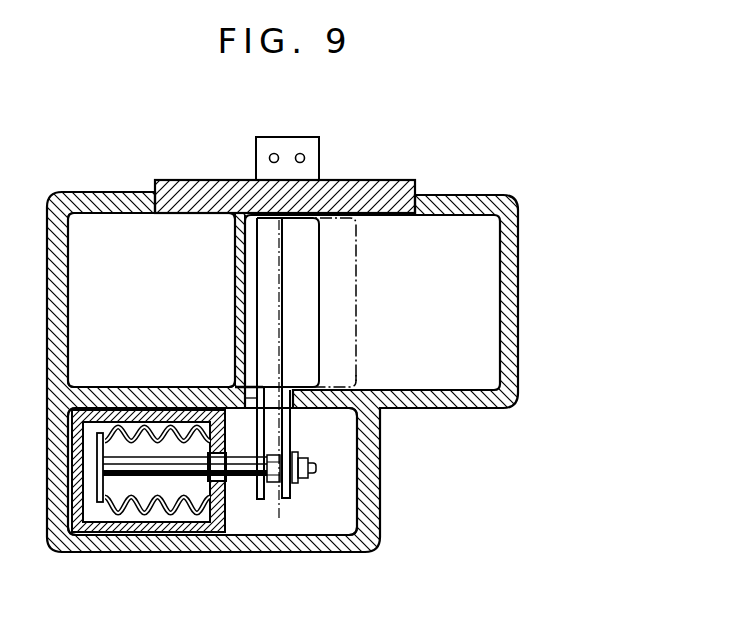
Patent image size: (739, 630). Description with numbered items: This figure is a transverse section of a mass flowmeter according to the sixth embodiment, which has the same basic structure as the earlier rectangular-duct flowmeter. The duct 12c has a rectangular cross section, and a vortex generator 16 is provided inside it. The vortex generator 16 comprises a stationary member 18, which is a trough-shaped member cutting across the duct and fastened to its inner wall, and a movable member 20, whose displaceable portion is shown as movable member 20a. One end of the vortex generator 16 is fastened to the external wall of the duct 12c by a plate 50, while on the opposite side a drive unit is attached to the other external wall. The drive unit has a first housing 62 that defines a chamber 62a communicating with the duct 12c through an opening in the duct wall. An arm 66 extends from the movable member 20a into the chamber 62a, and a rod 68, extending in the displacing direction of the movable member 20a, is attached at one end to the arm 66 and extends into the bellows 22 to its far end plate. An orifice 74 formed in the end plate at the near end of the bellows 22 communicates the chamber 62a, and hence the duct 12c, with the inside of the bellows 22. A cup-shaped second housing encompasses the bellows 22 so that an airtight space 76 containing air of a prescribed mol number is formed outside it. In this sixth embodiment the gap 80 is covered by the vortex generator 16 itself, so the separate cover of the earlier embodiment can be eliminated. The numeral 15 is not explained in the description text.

The duct 12c is at (465, 195).
The plate 50 is at (343, 180).
The vortex generator 16 is at (210, 315).
The stationary member 18 is at (236, 259).
The opening in partition 15 is at (245, 398).
The movable member 20a is at (307, 288).
The movable member 20 is at (358, 323).
The gap 80 is at (313, 388).
The arm 66 is at (262, 432).
The rod 68 is at (238, 482).
The orifice 74 is at (118, 527).
The airtight space 76 is at (85, 518).
The bellows 22 is at (170, 512).
The first housing 62 is at (357, 545).
The chamber 62a is at (290, 525).